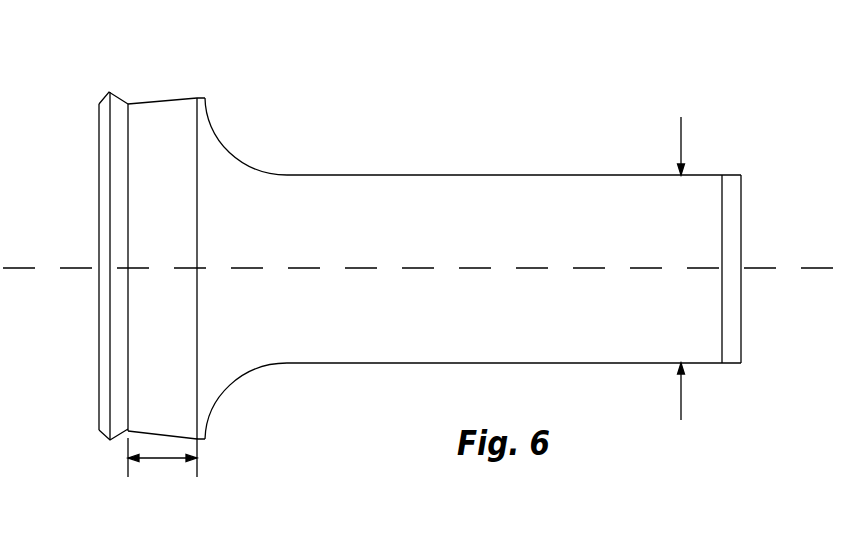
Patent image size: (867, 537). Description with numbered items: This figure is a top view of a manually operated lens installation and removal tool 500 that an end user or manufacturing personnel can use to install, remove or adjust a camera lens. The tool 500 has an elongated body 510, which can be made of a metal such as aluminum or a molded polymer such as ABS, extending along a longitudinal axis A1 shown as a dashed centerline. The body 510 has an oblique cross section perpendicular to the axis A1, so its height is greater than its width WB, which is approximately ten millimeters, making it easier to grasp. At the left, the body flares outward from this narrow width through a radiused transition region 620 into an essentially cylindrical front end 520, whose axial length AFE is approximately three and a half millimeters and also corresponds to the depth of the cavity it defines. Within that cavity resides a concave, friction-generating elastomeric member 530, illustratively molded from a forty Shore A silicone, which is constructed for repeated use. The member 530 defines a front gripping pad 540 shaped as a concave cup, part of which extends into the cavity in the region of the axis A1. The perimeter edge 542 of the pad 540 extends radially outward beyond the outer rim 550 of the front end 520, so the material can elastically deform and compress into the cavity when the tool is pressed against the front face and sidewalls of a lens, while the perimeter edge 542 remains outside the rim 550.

The tool 500 is at (389, 268).
The body 510 is at (490, 183).
The front end 520 is at (158, 105).
The elastomeric member 530 is at (109, 413).
The front gripping pad 540 is at (96, 268).
The perimeter edge 542 is at (103, 161).
The outer rim 550 is at (135, 103).
The radiused transition region 620 is at (233, 148).
The body width WB is at (681, 138).
The axial length of the front end AFE is at (177, 476).
The axis A1 is at (419, 289).